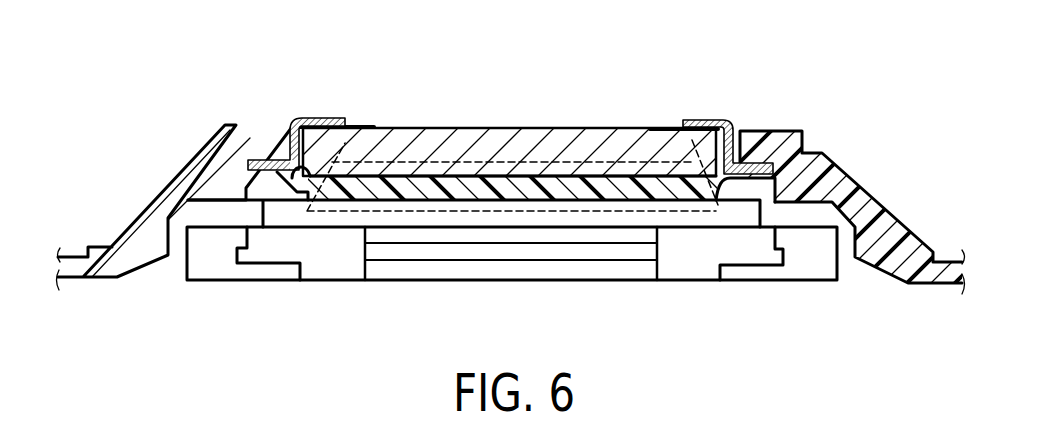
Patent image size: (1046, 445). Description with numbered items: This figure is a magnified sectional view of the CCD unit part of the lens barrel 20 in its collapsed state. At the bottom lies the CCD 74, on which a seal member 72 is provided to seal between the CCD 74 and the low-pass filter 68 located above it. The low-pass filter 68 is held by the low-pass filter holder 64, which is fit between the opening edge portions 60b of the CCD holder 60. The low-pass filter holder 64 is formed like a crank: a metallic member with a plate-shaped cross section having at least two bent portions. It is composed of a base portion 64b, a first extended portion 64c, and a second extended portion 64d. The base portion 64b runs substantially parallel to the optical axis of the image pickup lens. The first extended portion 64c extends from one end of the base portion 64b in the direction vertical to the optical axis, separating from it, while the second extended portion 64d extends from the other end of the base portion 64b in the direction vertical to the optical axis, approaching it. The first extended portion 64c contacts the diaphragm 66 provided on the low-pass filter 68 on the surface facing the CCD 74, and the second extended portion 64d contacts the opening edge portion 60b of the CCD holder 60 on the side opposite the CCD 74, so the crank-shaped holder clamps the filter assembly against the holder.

The liquid crystal display device 20 is at (275, 178).
The CCD holder 60 is at (128, 226).
The opening edge portion 60b is at (762, 147).
The low-pass filter holder 64 is at (684, 120).
The base portion 64b is at (286, 122).
The first extended portion 64c is at (262, 158).
The second extended portion 64d is at (333, 116).
The diaphragm 66 is at (357, 126).
The low-pass filter 68 is at (412, 132).
The seal member 72 is at (772, 206).
The CCD 74 is at (349, 263).